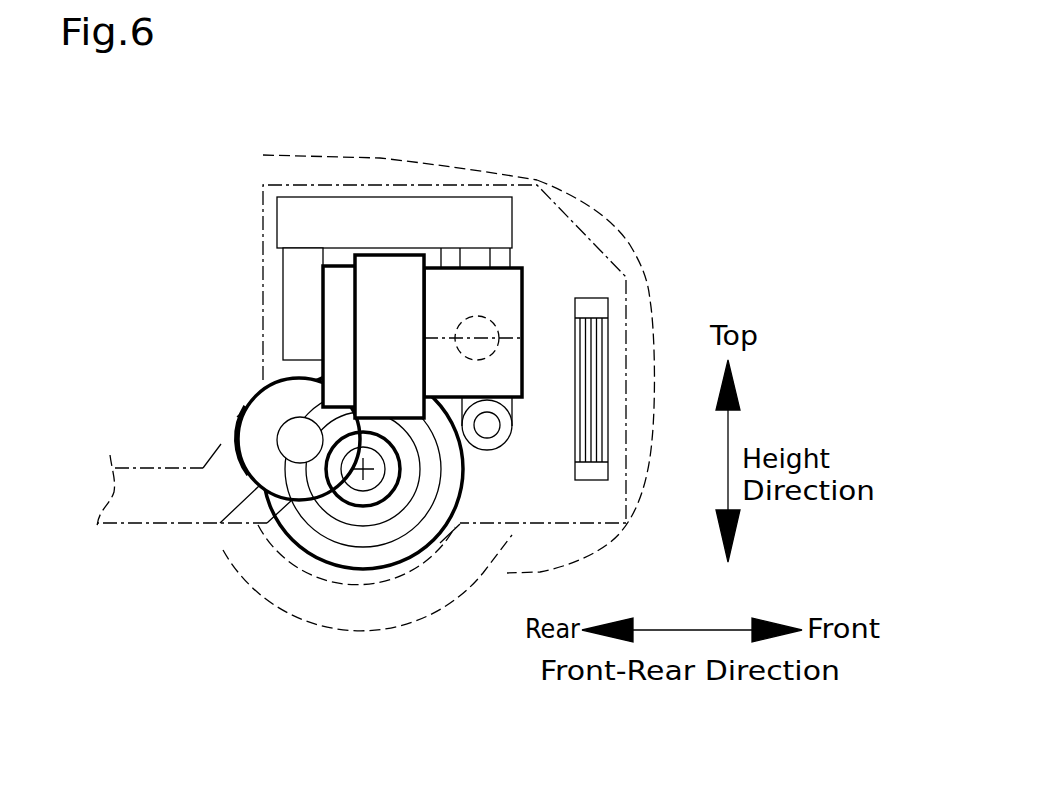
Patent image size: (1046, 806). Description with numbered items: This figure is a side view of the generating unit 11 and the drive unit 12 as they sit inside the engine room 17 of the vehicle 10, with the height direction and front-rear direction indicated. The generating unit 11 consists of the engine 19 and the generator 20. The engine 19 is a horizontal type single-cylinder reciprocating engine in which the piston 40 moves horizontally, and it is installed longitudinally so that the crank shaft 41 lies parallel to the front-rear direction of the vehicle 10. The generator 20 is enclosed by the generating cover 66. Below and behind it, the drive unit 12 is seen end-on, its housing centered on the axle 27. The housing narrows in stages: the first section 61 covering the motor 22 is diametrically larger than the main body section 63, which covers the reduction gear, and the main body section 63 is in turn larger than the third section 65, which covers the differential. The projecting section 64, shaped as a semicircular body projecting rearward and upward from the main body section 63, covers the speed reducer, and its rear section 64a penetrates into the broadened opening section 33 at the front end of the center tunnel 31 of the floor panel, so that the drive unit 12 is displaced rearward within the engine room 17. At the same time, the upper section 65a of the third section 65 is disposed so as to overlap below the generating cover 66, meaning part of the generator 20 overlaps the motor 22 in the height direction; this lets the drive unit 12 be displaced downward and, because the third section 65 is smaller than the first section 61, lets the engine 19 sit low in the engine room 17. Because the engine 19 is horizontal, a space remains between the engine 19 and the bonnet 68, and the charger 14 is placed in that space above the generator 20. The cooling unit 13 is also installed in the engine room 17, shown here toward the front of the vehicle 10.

The vehicle 10 is at (600, 143).
The generating unit 11 is at (533, 262).
The drive unit 12 is at (257, 512).
The cooling unit 13 is at (610, 333).
The charger 14 is at (442, 210).
The engine room 17 is at (502, 185).
The engine 19 is at (512, 292).
The generator 20 is at (340, 286).
The motor 22 is at (460, 487).
The axle 27 is at (377, 473).
The center tunnel 31 is at (170, 468).
The broadened opening section 33 is at (220, 445).
The piston 40 is at (492, 355).
The crank shaft 41 is at (500, 337).
The first section 61 is at (348, 578).
The main body section 63 is at (408, 538).
The projecting section 64 is at (287, 393).
The rear section 64a is at (222, 440).
The third section 65 is at (338, 510).
The upper section 65a is at (378, 426).
The generating cover 66 is at (380, 262).
The bonnet 68 is at (393, 160).